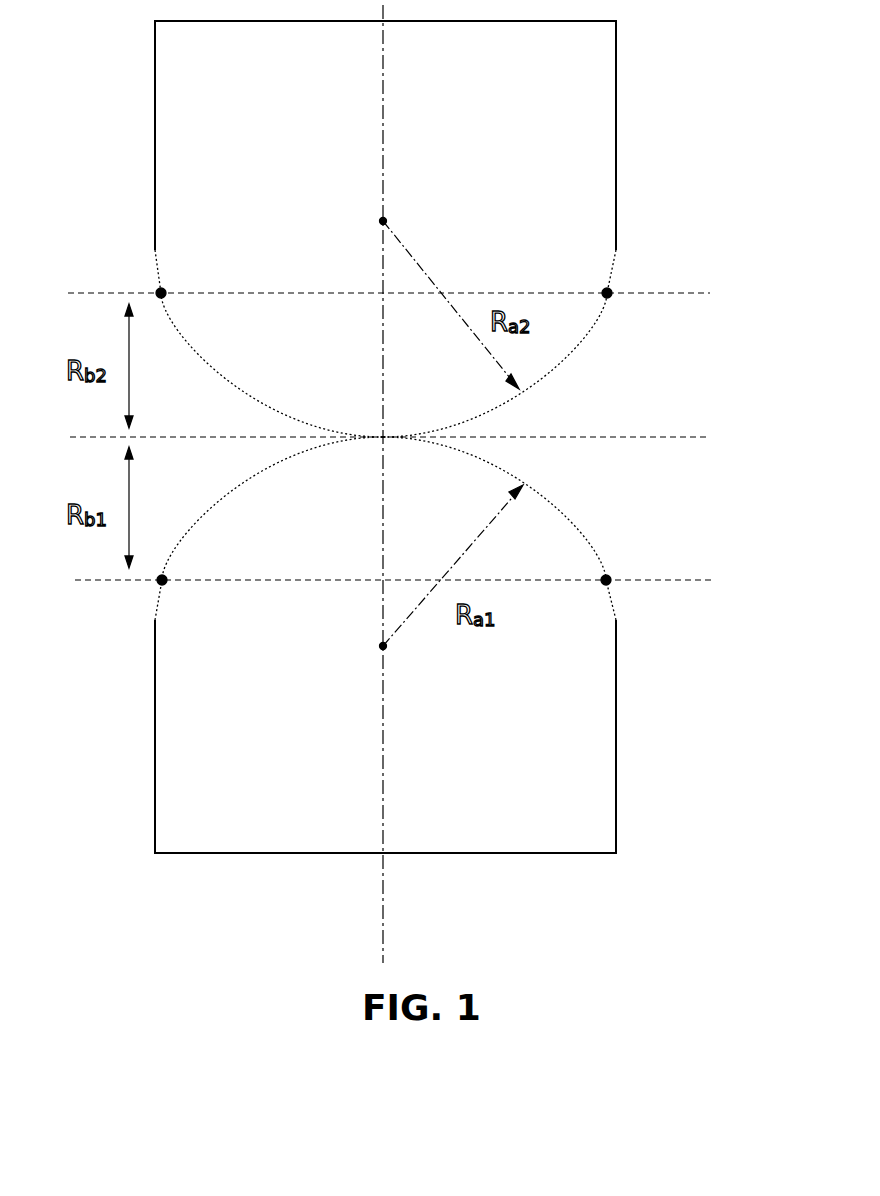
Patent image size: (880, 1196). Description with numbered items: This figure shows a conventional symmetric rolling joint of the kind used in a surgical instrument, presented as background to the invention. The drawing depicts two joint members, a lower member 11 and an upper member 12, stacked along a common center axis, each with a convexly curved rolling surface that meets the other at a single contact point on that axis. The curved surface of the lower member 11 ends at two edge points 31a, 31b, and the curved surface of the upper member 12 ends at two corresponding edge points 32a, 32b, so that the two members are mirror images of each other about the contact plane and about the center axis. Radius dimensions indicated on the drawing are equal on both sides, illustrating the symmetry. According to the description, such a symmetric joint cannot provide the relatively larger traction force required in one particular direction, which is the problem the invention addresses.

The first member (lower body) 11 is at (616, 683).
The second member (upper body) 12 is at (616, 167).
The first edge point of first member 31a is at (166, 584).
The second edge point of first member 31b is at (602, 585).
The first edge point of second member 32a is at (165, 288).
The second edge point of second member 32b is at (603, 287).